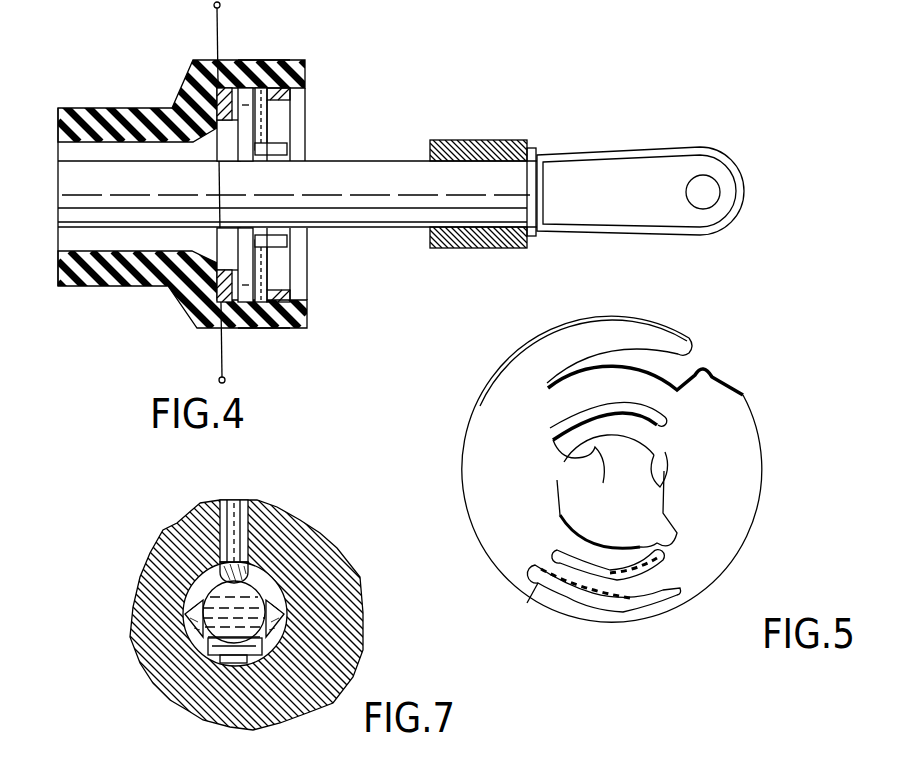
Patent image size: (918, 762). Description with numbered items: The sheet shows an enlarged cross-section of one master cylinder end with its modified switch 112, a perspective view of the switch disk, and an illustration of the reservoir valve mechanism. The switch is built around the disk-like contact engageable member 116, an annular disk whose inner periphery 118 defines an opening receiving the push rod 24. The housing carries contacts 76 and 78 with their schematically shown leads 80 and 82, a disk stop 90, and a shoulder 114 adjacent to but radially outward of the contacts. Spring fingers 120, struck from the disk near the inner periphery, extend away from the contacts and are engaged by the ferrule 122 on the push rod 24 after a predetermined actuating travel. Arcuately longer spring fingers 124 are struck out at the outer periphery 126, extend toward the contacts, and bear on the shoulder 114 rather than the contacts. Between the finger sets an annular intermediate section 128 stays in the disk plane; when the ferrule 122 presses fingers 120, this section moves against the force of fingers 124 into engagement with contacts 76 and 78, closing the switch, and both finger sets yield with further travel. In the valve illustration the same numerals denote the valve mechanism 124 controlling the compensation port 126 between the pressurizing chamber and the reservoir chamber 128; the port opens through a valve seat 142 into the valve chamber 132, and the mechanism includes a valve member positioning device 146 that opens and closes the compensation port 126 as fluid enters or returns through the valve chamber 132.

In FIG. 4, the push rod 24 is at (397, 207).
In FIG. 4, the switch contact 76 is at (183, 100).
In FIG. 4, the switch contact 78 is at (220, 290).
In FIG. 4, the lead 80 is at (213, 20).
In FIG. 4, the lead 82 is at (220, 353).
In FIG. 4, the disk stop 90 is at (284, 102).
In FIG. 4, the switch 112 is at (285, 123).
In FIG. 4, the shoulder 114 is at (232, 298).
In FIG. 4, the contact engageable member 116 is at (288, 272).
In FIG. 5, the contact engageable member 116 is at (463, 497).
In FIG. 5, the inner periphery 118 is at (665, 487).
In FIG. 4, the spring fingers 120 is at (283, 148).
In FIG. 5, the spring fingers 120 is at (643, 543).
In FIG. 4, the ferrule 122 is at (457, 140).
In FIG. 4, the spring fingers / valve mechanism 124 is at (243, 62).
In FIG. 5, the spring fingers / valve mechanism 124 is at (690, 335).
In FIG. 7, the spring fingers / valve mechanism 124 is at (190, 637).
In FIG. 5, the outer periphery / compensation port 126 is at (763, 470).
In FIG. 7, the outer periphery / compensation port 126 is at (237, 517).
In FIG. 5, the annular intermediate section / reservoir chamber 128 is at (650, 398).
In FIG. 7, the valve chamber 132 is at (273, 593).
In FIG. 7, the valve seat 142 is at (253, 578).
In FIG. 7, the valve member positioning device 146 is at (217, 592).